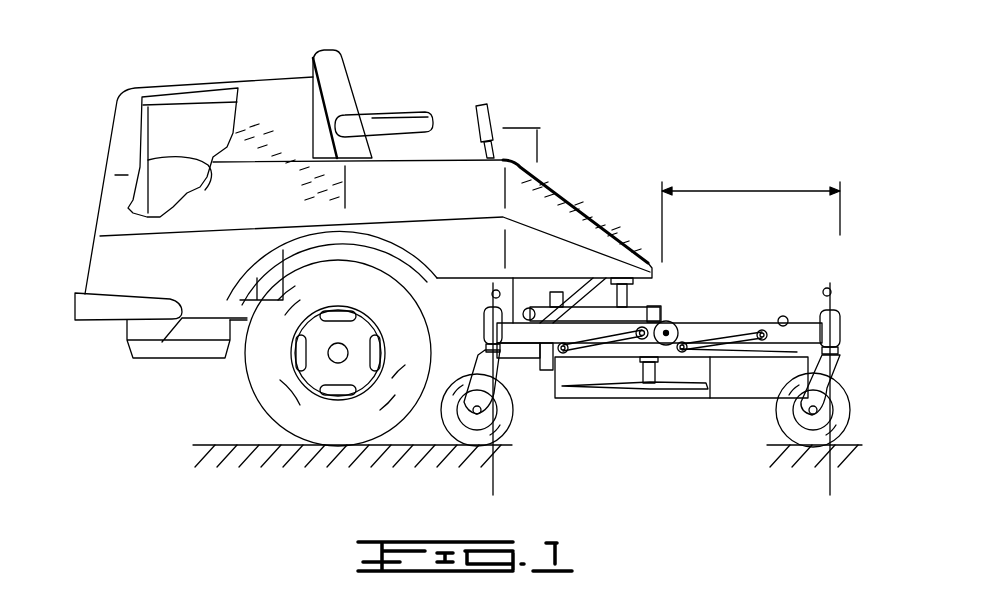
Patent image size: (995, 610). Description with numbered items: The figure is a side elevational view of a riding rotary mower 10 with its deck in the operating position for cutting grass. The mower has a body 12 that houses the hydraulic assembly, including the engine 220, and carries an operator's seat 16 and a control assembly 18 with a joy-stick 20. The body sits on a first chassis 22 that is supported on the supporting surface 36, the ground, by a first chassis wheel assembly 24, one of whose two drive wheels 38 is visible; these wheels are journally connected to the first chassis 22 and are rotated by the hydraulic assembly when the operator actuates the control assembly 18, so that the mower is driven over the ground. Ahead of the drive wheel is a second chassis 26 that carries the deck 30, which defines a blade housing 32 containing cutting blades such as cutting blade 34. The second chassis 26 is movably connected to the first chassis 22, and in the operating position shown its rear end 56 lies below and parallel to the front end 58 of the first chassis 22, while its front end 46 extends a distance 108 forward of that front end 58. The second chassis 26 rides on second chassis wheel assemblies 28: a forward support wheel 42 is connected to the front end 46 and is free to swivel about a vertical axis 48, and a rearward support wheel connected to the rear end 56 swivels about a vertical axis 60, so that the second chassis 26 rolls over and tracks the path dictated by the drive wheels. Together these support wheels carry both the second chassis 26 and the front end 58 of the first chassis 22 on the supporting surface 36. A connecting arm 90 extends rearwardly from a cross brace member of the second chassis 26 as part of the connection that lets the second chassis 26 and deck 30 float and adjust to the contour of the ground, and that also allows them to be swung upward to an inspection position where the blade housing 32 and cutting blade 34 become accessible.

The riding rotary mower 10 is at (673, 97).
The body 12 is at (142, 256).
The operator's seat 16 is at (345, 67).
The control assembly 18 is at (505, 125).
The joy-stick 20 is at (485, 103).
The first chassis 22 is at (242, 325).
The first chassis wheel assembly 24 is at (263, 414).
The second chassis 26 is at (804, 320).
The second chassis wheel assemblies 28 is at (437, 428).
The deck 30 is at (545, 392).
The blade housing 32 is at (747, 383).
The cutting blade 34 is at (623, 387).
The supporting surface 36 is at (852, 447).
The wheel 38 is at (347, 430).
The forward support wheel 42 is at (853, 405).
The front end 46 is at (815, 335).
The vertical axis 48 is at (826, 294).
The rear end 56 is at (487, 337).
The front end 58 is at (645, 305).
The vertical axis 60 is at (490, 290).
The connecting arm 90 is at (523, 363).
The distance 108 is at (750, 193).
The engine 220 is at (182, 132).